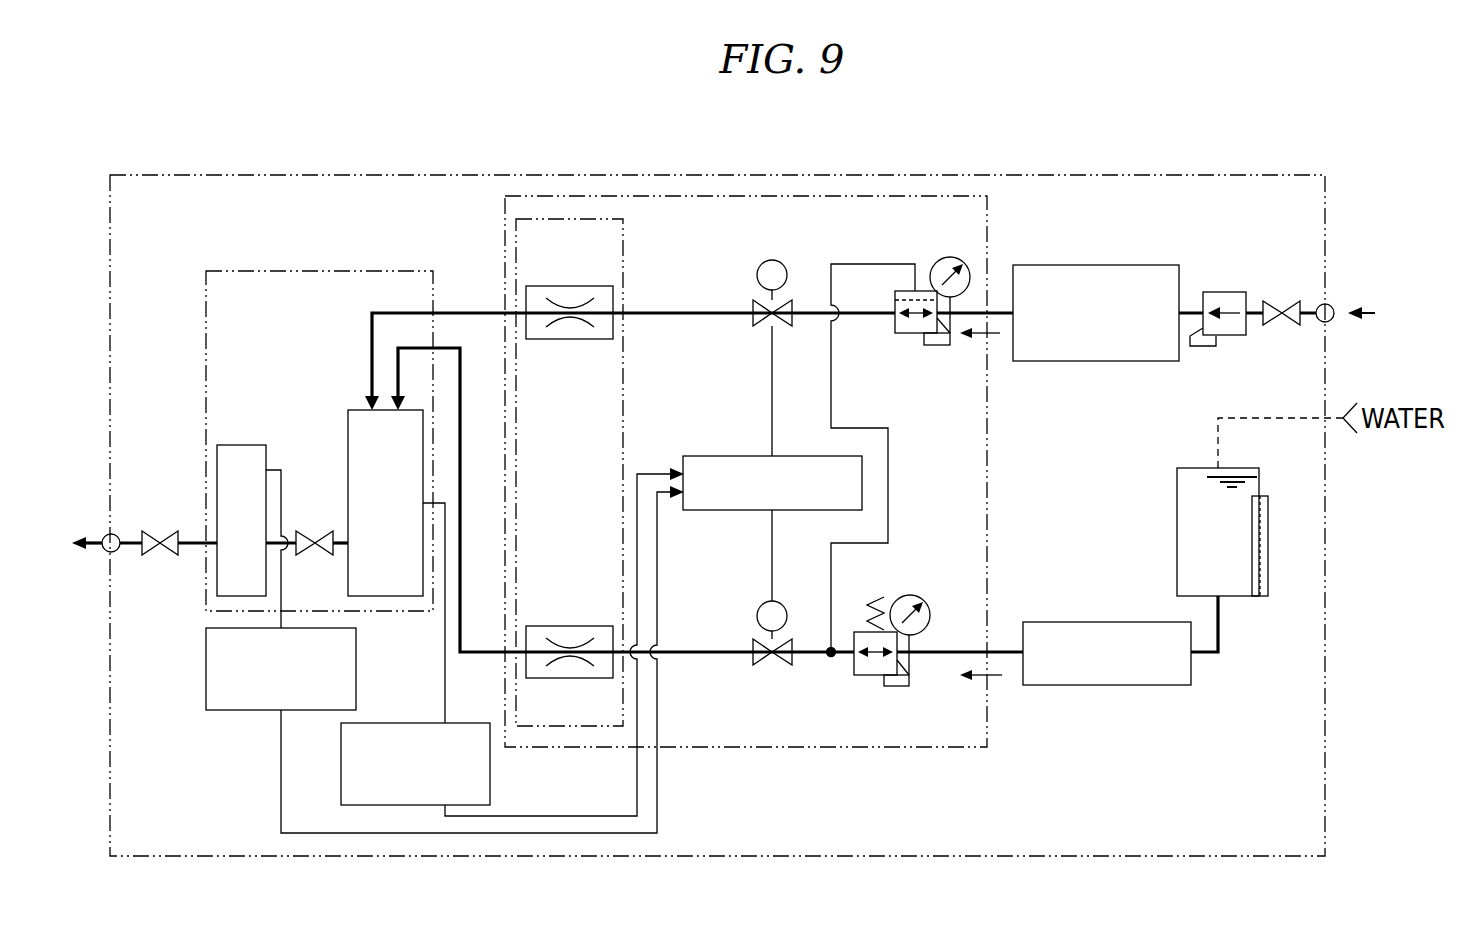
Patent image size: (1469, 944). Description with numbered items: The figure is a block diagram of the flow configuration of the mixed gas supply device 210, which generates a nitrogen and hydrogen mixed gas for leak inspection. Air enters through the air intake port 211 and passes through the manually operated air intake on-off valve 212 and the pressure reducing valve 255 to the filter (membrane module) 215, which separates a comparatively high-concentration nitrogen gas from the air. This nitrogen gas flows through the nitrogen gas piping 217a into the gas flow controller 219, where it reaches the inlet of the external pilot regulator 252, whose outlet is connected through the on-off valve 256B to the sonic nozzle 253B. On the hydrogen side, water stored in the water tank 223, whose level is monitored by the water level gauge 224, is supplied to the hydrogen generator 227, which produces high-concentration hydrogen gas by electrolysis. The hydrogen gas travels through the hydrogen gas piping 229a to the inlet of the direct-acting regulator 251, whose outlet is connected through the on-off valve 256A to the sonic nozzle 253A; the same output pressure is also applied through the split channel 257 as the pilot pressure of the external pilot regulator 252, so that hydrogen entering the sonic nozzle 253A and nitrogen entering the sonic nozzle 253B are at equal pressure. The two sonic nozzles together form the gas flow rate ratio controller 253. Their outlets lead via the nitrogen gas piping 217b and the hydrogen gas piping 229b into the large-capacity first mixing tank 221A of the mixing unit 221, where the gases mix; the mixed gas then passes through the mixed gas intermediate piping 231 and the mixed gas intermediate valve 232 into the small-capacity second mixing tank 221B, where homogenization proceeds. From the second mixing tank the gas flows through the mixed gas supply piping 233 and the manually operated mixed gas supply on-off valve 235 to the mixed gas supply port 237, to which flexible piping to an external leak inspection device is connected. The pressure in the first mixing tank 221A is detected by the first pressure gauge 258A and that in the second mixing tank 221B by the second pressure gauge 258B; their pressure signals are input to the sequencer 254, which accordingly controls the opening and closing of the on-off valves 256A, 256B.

The mixed gas supply device 210 is at (1247, 175).
The air intake port 211 is at (1337, 306).
The air intake on-off valve 212 is at (1284, 325).
The filter (membrane module) 215 is at (1092, 265).
The nitrogen gas piping 217a is at (1002, 300).
The nitrogen gas piping 217b is at (465, 313).
The gas flow controller 219 is at (990, 420).
The mixing unit 221 is at (305, 271).
The first mixing tank 221A is at (347, 427).
The second mixing tank 221B is at (240, 445).
The water tank 223 is at (1240, 597).
The water level gauge 224 is at (1263, 515).
The hydrogen generator 227 is at (1105, 687).
The hydrogen gas piping 229a is at (1000, 648).
The hydrogen gas piping 229b is at (485, 657).
The mixed gas intermediate piping 231 is at (342, 552).
The mixed gas intermediate valve 232 is at (318, 531).
The mixed gas supply piping 233 is at (192, 552).
The mixed gas supply on-off valve 235 is at (170, 531).
The mixed gas supply port 237 is at (119, 538).
The direct-acting regulator 251 is at (850, 640).
The external pilot regulator 252 is at (906, 335).
The gas flow rate ratio controller 253 is at (625, 255).
The sonic nozzle 253A is at (572, 626).
The sonic nozzle 253B is at (568, 344).
The sequencer 254 is at (808, 456).
The pressure reducing valve 255 is at (1217, 292).
The on-off valve 256A is at (760, 667).
The on-off valve 256B is at (793, 308).
The split channel 257 is at (888, 442).
The first pressure gauge 258A is at (420, 723).
The second pressure gauge 258B is at (206, 665).